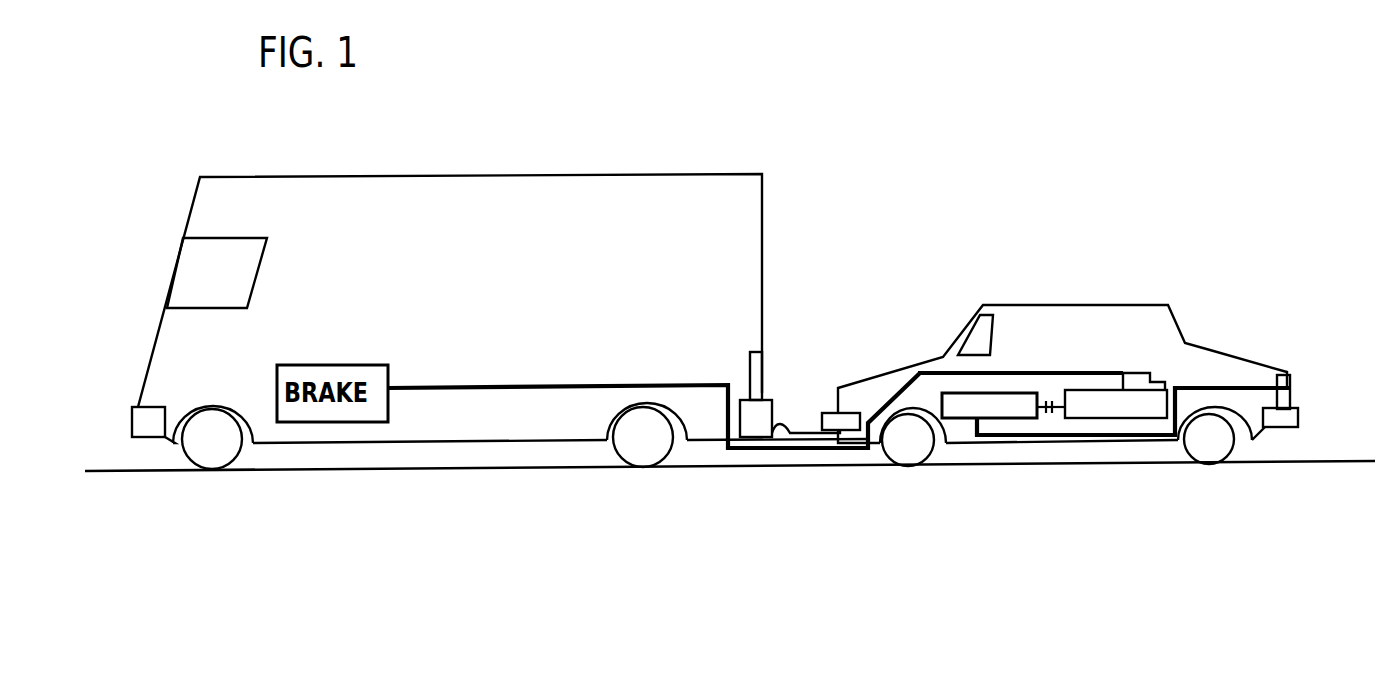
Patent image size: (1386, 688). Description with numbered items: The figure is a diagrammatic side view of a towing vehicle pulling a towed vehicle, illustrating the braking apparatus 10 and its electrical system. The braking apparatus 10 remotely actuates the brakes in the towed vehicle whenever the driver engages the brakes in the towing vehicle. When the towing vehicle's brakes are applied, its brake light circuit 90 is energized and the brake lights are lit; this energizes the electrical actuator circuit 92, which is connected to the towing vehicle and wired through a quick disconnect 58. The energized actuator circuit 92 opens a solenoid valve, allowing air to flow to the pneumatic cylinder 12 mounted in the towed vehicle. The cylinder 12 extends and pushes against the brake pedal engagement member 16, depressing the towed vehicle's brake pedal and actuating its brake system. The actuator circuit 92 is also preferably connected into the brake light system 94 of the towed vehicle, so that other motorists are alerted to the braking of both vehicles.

The braking apparatus 10 is at (730, 507).
The pneumatic cylinder 12 is at (1122, 387).
The brake pedal engagement member 16 is at (1047, 373).
The quick disconnect 58 is at (1024, 347).
The brake light circuit 90 is at (839, 392).
The electrical actuator circuit 92 is at (1054, 385).
The brake light system 94 is at (1318, 384).